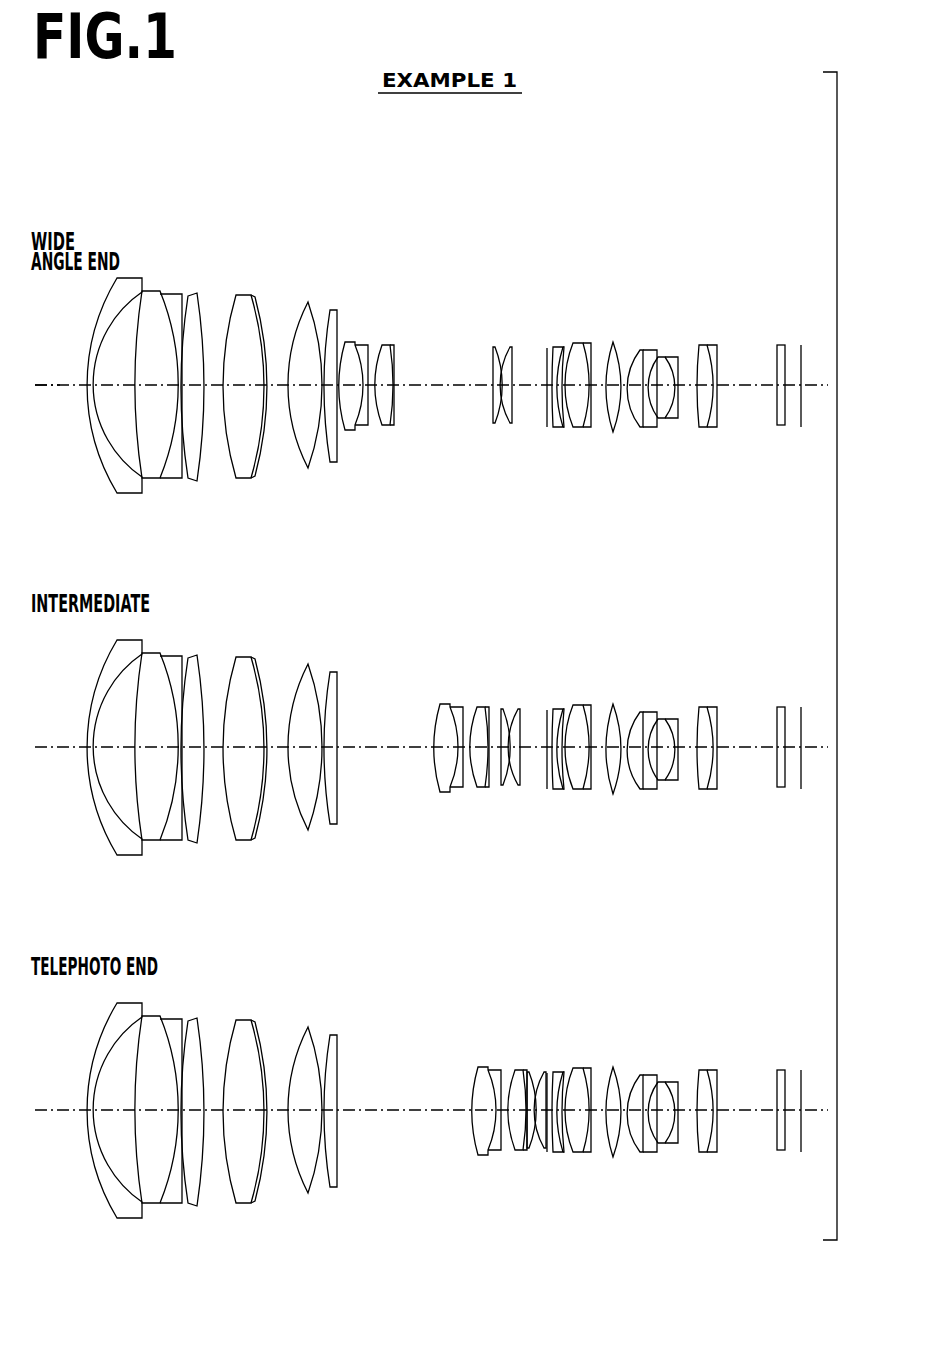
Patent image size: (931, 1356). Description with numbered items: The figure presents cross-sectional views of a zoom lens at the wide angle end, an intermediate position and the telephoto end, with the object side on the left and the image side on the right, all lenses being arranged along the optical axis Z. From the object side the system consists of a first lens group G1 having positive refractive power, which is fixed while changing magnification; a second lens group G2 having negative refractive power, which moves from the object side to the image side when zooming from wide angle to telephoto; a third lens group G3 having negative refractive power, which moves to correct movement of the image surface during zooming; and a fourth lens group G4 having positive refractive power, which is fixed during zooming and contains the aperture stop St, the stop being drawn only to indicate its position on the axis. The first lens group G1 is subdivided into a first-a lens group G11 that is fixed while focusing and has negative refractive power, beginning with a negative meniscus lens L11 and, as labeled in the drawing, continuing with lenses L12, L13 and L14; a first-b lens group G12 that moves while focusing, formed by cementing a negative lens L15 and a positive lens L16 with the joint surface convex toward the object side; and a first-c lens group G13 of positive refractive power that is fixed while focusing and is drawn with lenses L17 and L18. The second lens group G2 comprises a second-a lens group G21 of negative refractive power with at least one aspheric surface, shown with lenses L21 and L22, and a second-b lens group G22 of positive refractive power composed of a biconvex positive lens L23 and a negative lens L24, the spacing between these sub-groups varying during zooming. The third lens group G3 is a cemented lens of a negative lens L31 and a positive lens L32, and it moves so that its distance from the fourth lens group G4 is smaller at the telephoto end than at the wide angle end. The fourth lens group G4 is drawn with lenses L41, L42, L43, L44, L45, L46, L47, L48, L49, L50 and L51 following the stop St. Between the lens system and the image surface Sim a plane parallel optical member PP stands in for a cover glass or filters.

The first lens group G1 is at (243, 664).
The first-a lens group G11 is at (165, 320).
The first-b lens group G12 is at (272, 313).
The first-c lens group G13 is at (344, 308).
The second lens group G2 is at (440, 633).
The second-a lens group G21 is at (404, 289).
The second-b lens group G22 is at (458, 286).
The third lens group G3 is at (554, 648).
The fourth lens group G4 is at (637, 749).
The negative meniscus lens L11 is at (122, 277).
The lens L12 is at (150, 290).
The lens L13 is at (170, 293).
The lens L14 is at (196, 292).
The negative lens L15 is at (243, 294).
The positive lens L16 is at (257, 296).
The lens L17 is at (308, 301).
The lens L18 is at (333, 309).
The lens L21 is at (346, 341).
The lens L22 is at (367, 344).
The positive lens L23 is at (386, 344).
The negative lens L24 is at (394, 344).
The negative lens L31 is at (503, 346).
The positive lens L32 is at (514, 346).
The lens L41 is at (553, 428).
The lens L42 is at (560, 428).
The lens L43 is at (571, 428).
The lens L44 is at (587, 428).
The lens L45 is at (613, 432).
The lens L46 is at (637, 427).
The lens L47 is at (650, 427).
The lens L48 is at (663, 419).
The lens L49 is at (675, 419).
The lens L50 is at (705, 428).
The lens L51 is at (746, 442).
The aperture stop St is at (546, 424).
The plane parallel optical member PP is at (779, 344).
The image surface Sim is at (802, 357).
The optical axis Z is at (50, 384).